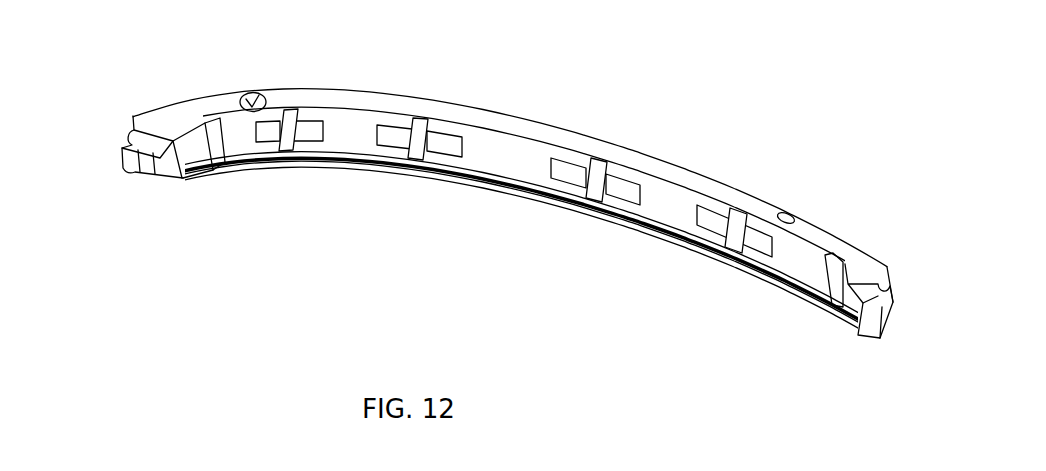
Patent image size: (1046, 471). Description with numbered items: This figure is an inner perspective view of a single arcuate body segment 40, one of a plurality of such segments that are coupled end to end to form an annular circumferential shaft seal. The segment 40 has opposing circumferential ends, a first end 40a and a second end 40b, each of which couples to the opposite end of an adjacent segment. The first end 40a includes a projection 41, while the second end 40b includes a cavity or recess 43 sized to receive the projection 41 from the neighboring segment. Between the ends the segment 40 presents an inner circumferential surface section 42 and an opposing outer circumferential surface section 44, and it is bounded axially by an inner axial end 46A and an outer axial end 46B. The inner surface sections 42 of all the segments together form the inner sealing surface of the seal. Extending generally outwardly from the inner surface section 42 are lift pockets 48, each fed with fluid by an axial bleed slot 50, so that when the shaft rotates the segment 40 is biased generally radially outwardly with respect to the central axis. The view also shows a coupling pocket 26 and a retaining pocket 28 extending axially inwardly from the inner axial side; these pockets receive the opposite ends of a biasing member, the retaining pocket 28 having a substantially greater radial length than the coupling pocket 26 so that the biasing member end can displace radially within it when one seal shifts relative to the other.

The arcuate body segment 40 is at (503, 67).
The retaining pocket 28 is at (257, 97).
The lift pocket 48 is at (387, 132).
The axial bleed slot 50 is at (283, 147).
The inner axial end 46A is at (520, 130).
The outer circumferential surface section 44 is at (597, 146).
The coupling pocket 26 is at (790, 215).
The projection 41 is at (880, 298).
The first circumferential end 40a is at (882, 334).
The second circumferential end 40b is at (131, 160).
The recess 43 is at (153, 158).
The inner circumferential surface section 42 is at (508, 157).
The outer axial end 46B is at (642, 233).